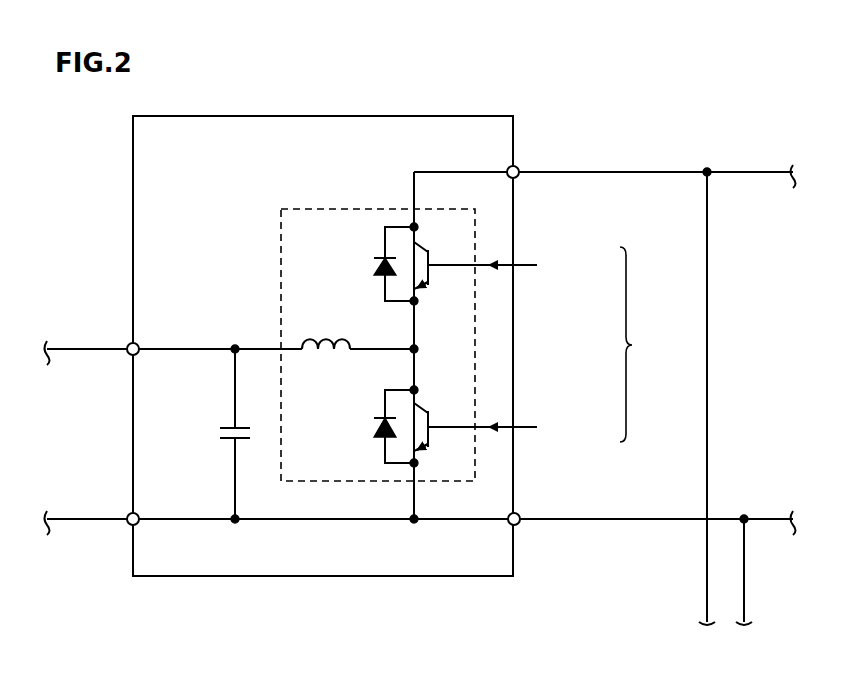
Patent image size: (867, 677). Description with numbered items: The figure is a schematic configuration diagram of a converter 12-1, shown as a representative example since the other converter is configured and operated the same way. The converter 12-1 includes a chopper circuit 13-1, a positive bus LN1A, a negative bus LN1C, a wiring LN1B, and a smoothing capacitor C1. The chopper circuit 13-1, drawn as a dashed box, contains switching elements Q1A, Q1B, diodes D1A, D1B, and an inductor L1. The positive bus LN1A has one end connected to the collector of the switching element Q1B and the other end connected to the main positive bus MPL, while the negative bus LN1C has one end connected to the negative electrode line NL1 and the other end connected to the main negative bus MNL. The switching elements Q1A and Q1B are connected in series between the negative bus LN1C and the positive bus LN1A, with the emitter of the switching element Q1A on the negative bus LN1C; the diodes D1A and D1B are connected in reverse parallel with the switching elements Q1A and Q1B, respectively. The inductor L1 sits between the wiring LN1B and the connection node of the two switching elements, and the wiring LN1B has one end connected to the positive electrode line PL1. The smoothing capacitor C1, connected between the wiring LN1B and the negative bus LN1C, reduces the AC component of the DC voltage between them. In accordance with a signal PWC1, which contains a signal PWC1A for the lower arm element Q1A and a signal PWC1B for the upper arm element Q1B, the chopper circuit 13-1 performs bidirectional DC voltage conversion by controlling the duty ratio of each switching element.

The converter 12-1 is at (478, 116).
The chopper circuit 13-1 is at (312, 209).
The positive bus LN1A is at (603, 163).
The wiring LN1B is at (276, 336).
The negative bus LN1C is at (466, 510).
The positive electrode line PL1 is at (78, 347).
The negative electrode line NL1 is at (81, 517).
The main positive bus MPL is at (770, 170).
The main negative bus MNL is at (772, 517).
The inductor L1 is at (326, 331).
The smoothing capacitor C1 is at (230, 428).
The switching element Q1A is at (436, 424).
The switching element Q1B is at (436, 262).
The diode D1A is at (376, 426).
The diode D1B is at (376, 264).
The signal PWC1A is at (518, 426).
The signal PWC1B is at (518, 264).
The signal PWC1 is at (654, 344).